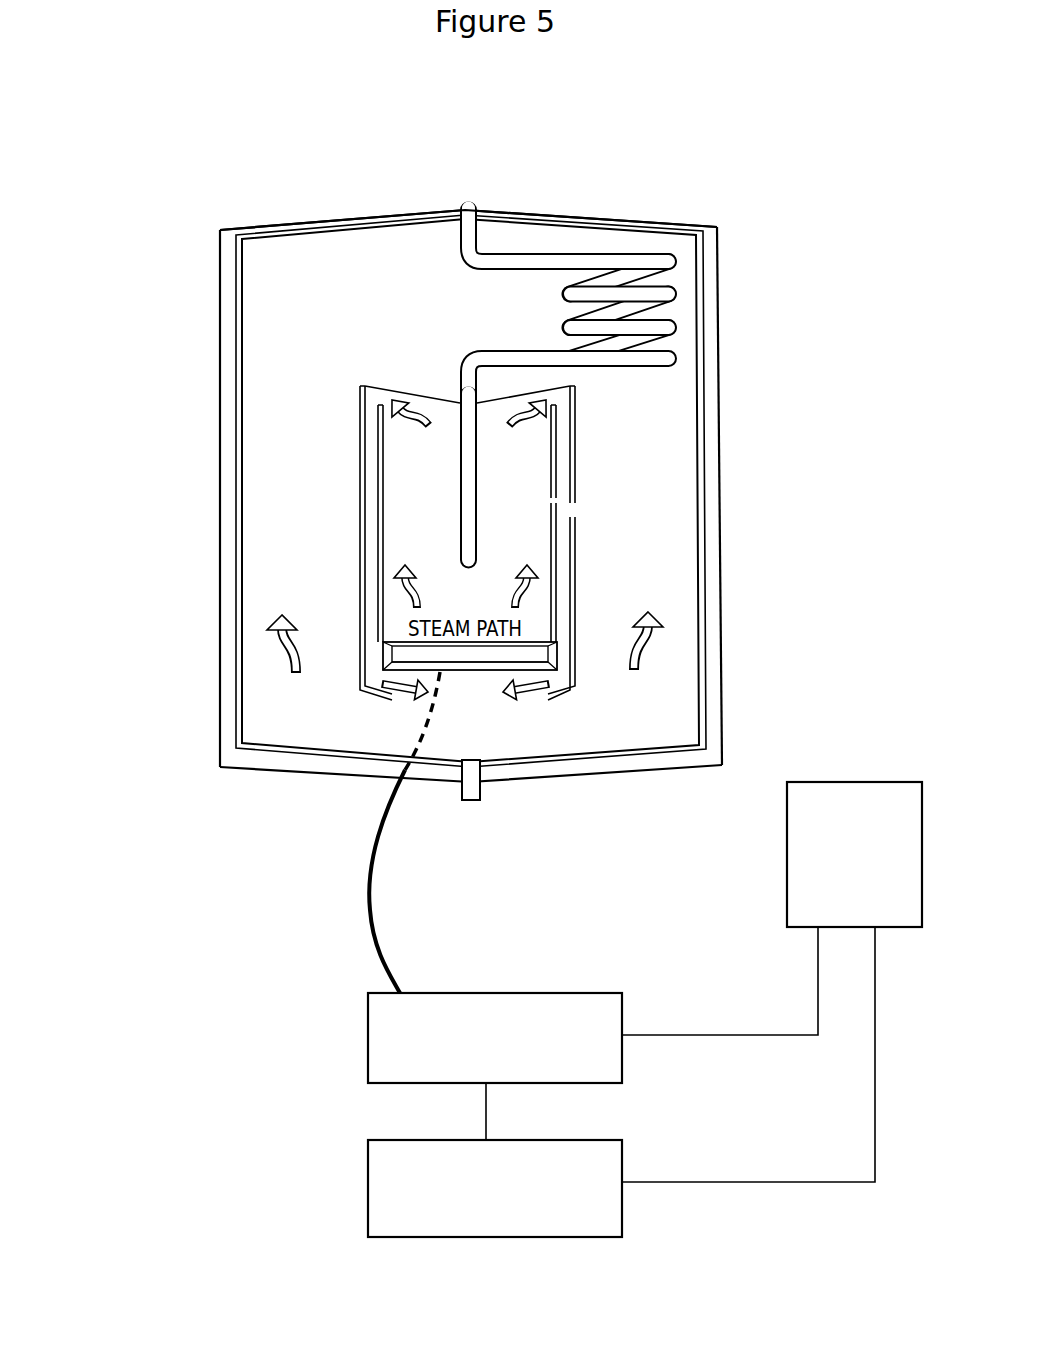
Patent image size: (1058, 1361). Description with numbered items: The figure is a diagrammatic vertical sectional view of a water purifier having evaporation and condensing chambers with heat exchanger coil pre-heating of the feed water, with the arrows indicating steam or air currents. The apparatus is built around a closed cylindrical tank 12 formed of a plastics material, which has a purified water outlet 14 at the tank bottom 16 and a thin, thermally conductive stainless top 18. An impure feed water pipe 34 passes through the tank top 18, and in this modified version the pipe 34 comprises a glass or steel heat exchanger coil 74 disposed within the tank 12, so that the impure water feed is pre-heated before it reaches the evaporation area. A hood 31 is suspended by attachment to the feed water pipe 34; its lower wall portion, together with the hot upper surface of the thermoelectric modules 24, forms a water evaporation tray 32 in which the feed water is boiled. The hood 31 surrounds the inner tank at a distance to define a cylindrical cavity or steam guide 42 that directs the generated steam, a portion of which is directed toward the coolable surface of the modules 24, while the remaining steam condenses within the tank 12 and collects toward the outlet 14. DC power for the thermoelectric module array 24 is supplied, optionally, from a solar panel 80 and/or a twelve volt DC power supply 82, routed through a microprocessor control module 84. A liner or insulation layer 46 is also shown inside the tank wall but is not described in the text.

The closed cylindrical tank 12 is at (710, 437).
The purified water outlet 14 is at (457, 795).
The tank bottom 16 is at (290, 770).
The thermally conductive stainless top 18 is at (267, 227).
The thermoelectric modules 24 is at (500, 672).
The hood 31 is at (377, 545).
The water evaporation tray 32 is at (527, 650).
The impure feed water pipe 34 is at (470, 482).
The steam guide 42 is at (372, 502).
The insulation liner 46 is at (302, 232).
The heat exchanger coil 74 is at (647, 297).
The solar panel 80 is at (605, 1203).
The DC power supply 82 is at (808, 782).
The microprocessor control module 84 is at (602, 1005).